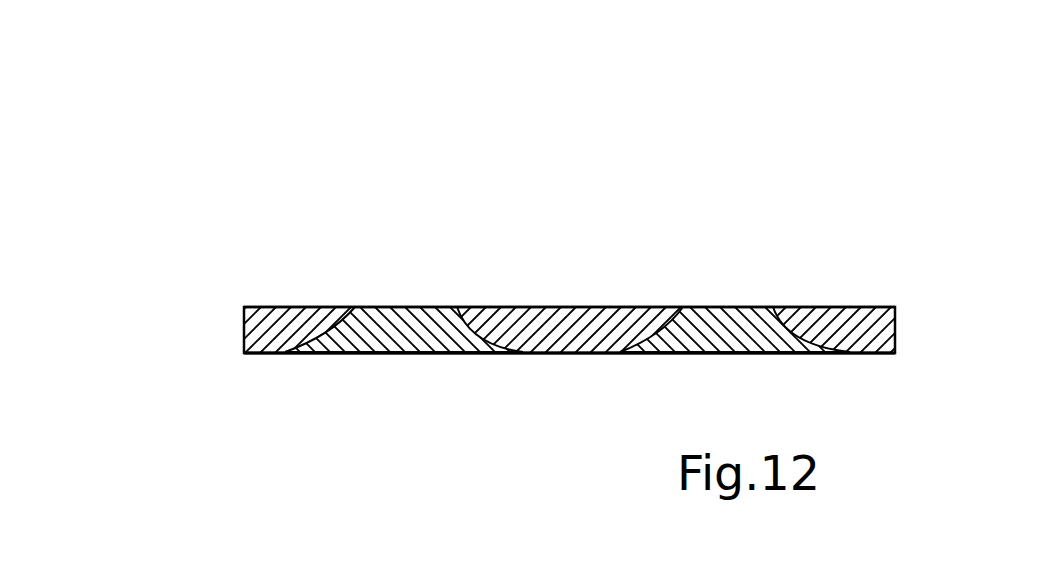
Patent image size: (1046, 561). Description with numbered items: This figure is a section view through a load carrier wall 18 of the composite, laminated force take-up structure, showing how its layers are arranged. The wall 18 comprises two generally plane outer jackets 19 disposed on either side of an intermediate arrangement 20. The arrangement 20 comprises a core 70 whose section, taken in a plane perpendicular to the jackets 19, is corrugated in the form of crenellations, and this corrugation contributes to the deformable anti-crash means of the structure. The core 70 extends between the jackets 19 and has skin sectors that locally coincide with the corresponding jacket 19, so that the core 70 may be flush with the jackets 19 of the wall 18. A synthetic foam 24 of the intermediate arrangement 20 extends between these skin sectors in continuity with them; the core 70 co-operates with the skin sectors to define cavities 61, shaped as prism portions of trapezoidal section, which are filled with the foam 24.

The load carrier wall 18 is at (568, 296).
The outer jackets 19 is at (278, 306).
The intermediate arrangement 20 is at (504, 296).
The core 70 is at (337, 308).
The synthetic foam 24 is at (390, 355).
The cavities 61 is at (390, 355).